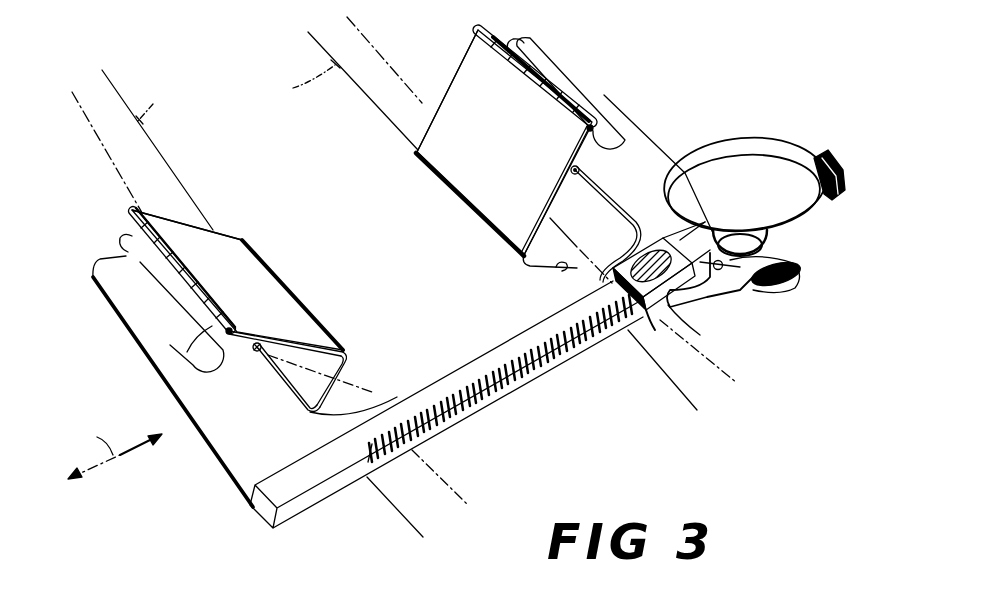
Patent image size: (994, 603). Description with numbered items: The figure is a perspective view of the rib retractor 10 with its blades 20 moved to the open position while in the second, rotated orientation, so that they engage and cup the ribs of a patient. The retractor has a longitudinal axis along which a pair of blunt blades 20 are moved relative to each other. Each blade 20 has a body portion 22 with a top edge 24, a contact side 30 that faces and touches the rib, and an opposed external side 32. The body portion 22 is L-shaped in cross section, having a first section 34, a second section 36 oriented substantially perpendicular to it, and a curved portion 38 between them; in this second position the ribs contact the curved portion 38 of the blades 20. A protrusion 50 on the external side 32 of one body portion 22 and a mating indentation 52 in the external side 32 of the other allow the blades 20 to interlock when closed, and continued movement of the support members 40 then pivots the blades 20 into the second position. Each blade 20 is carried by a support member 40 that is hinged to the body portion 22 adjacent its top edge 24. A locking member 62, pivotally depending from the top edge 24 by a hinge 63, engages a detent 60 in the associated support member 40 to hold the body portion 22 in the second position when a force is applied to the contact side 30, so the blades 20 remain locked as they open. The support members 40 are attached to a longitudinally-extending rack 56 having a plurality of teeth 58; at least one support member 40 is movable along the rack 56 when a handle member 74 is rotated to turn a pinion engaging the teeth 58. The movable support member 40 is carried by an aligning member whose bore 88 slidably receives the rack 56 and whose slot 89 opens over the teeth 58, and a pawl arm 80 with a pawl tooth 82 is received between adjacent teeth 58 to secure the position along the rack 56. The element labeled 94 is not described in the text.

The rib retractor 10 is at (749, 80).
The blade 20 is at (257, 276).
The body portion 22 is at (162, 214).
The top edge 24 is at (255, 351).
The contact side 30 is at (572, 275).
The external side 32 is at (293, 305).
The first section 34 is at (217, 232).
The second section 36 is at (362, 393).
The curved portion 38 is at (466, 210).
The support member 40 is at (212, 445).
The protrusion 50 is at (522, 258).
The indentation 52 is at (350, 352).
The rack 56 is at (830, 168).
The teeth 58 is at (512, 372).
The detent 60 is at (172, 388).
The locking member 62 is at (167, 307).
The hinge 63 is at (137, 221).
The handle member 74 is at (743, 140).
The pawl arm 80 is at (790, 288).
The pawl tooth 82 is at (680, 305).
The bore 88 is at (653, 327).
The slot 89 is at (673, 313).
The catch 94 is at (648, 318).